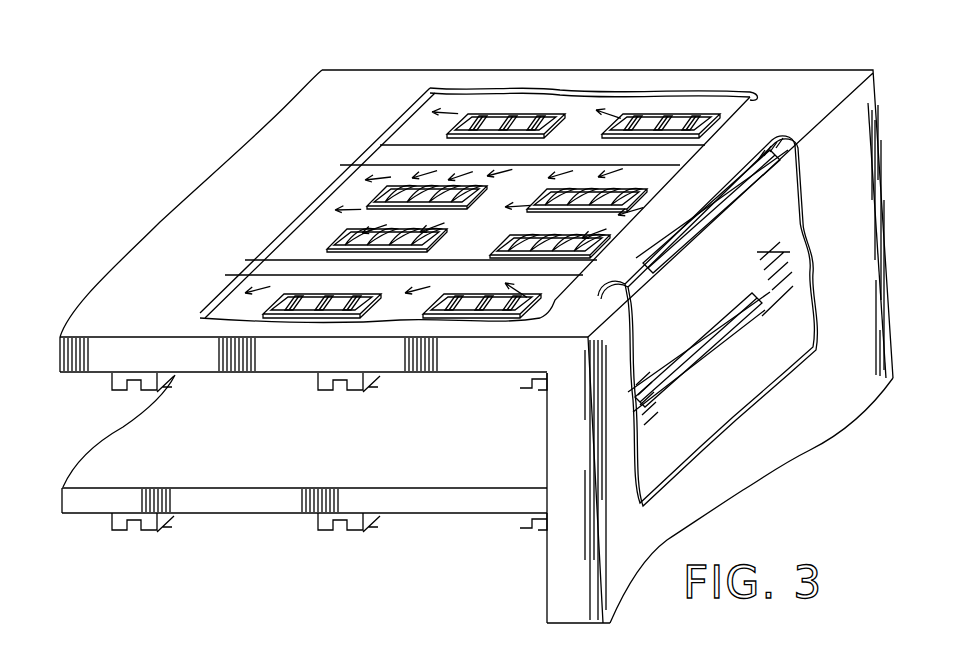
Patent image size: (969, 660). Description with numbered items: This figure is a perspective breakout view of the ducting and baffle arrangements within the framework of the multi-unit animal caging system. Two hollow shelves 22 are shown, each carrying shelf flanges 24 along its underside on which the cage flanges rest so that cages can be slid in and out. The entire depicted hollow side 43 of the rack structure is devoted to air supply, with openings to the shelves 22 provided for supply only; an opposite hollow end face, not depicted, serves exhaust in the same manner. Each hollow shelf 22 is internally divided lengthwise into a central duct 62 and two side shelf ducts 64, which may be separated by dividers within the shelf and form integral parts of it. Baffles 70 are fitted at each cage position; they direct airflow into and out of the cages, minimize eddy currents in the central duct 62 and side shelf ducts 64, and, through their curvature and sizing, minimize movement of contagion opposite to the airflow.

The hollow shelf 22 is at (243, 373).
The shelf flange 24 is at (160, 382).
The hollow side 43 is at (748, 471).
The central duct 62 is at (340, 188).
The side shelf duct 64 is at (430, 130).
The baffle 70 is at (520, 115).